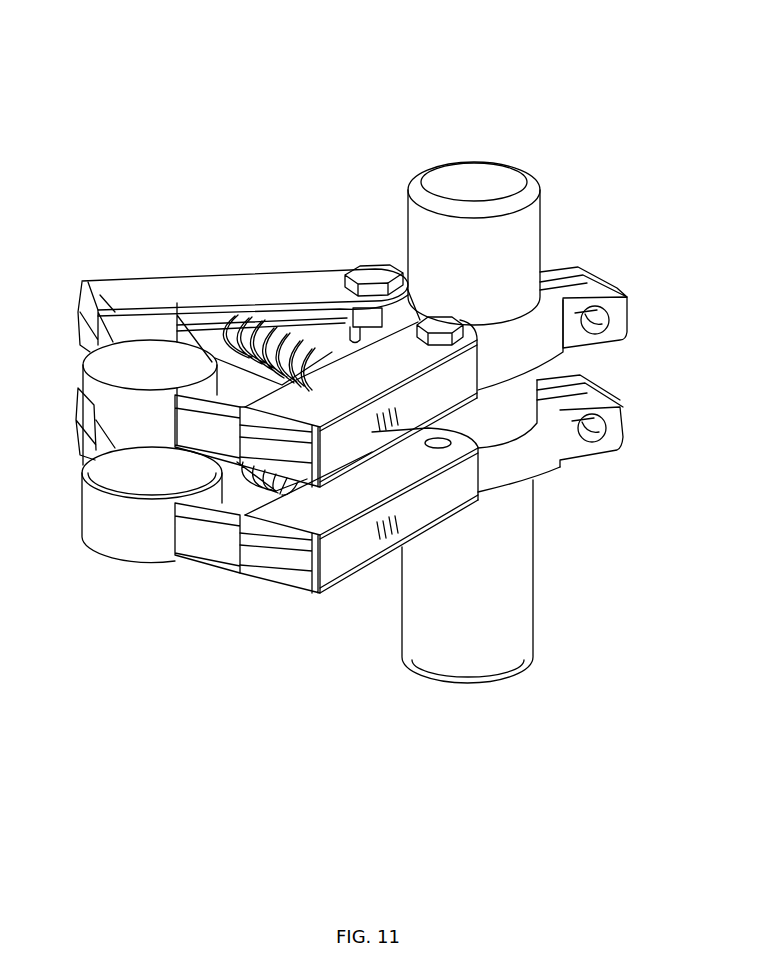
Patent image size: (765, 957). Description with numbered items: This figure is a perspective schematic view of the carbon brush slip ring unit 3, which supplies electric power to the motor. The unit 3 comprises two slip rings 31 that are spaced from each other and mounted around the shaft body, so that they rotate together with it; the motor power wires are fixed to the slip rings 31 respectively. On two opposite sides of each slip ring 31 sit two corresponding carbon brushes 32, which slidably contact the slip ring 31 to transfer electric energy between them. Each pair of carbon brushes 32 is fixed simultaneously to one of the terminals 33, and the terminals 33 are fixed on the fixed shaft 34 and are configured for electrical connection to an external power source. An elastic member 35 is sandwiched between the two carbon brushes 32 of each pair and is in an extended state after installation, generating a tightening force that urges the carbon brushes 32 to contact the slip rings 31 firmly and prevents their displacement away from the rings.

The carbon brush slip ring unit 3 is at (359, 43).
The slip rings 31 is at (117, 538).
The carbon brushes 32 is at (357, 382).
The terminals 33 is at (627, 297).
The fixed shaft 34 is at (463, 570).
The elastic member 35 is at (290, 358).